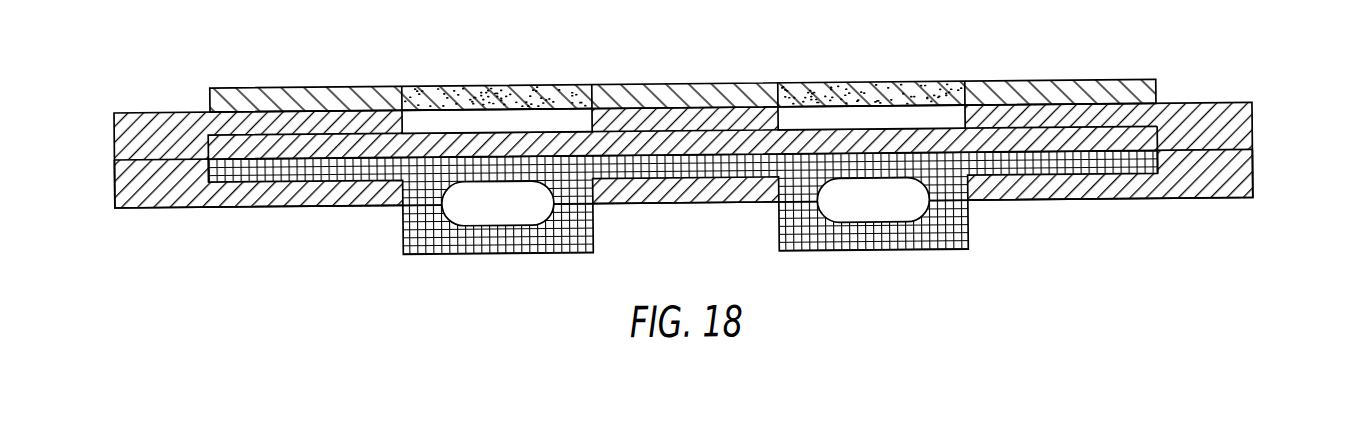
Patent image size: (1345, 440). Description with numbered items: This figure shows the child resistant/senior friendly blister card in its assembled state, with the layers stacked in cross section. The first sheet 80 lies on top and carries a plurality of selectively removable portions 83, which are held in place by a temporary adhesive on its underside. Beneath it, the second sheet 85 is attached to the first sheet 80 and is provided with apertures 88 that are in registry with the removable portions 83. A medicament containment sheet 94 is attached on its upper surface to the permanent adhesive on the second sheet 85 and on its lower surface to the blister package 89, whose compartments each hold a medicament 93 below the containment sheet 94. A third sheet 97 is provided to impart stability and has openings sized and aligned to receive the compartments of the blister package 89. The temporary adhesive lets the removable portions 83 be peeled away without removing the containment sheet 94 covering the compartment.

The first sheet 80 is at (1157, 97).
The selectively removable portions 83 is at (484, 90).
The second sheet 85 is at (1253, 136).
The apertures 88 is at (422, 121).
The blister package 89 is at (236, 151).
The medicament 93 is at (847, 219).
The medicament containment sheet 94 is at (1135, 145).
The third sheet 97 is at (1253, 188).